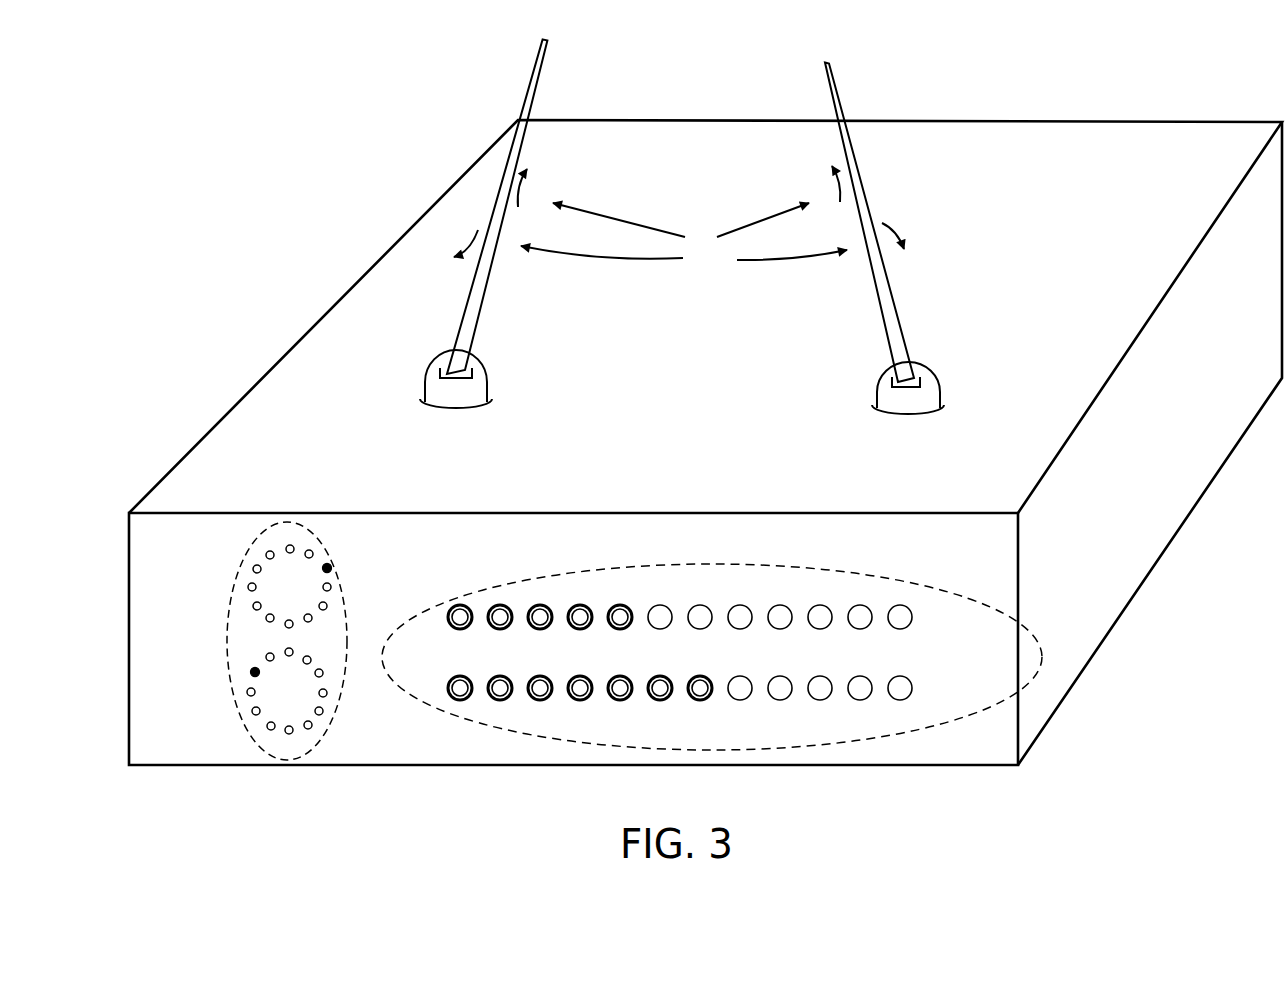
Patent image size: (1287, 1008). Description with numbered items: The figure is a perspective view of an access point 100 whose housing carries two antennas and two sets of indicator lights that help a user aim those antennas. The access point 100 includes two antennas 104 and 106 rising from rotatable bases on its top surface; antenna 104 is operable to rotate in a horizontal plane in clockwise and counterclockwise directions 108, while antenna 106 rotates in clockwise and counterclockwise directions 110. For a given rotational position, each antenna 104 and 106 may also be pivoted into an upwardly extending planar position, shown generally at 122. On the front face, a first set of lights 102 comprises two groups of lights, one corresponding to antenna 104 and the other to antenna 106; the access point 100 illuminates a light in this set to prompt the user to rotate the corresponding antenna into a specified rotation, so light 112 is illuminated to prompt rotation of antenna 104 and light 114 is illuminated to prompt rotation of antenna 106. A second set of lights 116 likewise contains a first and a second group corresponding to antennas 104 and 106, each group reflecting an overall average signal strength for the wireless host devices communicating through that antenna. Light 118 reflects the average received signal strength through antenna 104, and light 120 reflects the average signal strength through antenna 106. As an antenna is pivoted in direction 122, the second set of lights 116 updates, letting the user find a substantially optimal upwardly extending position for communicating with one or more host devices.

The access point 100 is at (990, 795).
The first set of lights 102 is at (289, 500).
The antenna 104 is at (557, 453).
The antenna 106 is at (968, 351).
The clockwise and counterclockwise directions 108 is at (502, 434).
The clockwise and counterclockwise directions 110 is at (853, 429).
The light 112 is at (331, 564).
The light 114 is at (252, 668).
The second set of lights 116 is at (403, 697).
The light 118 is at (637, 593).
The light 120 is at (705, 713).
The upwardly extending planar position 122 is at (679, 217).